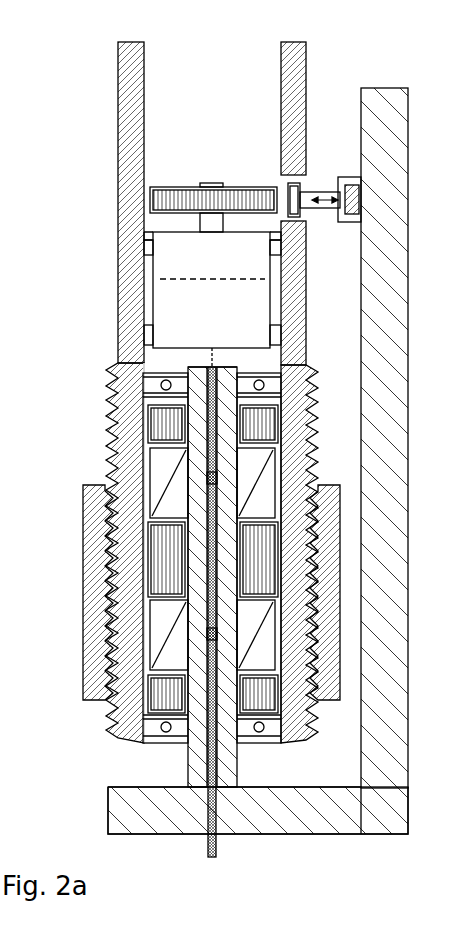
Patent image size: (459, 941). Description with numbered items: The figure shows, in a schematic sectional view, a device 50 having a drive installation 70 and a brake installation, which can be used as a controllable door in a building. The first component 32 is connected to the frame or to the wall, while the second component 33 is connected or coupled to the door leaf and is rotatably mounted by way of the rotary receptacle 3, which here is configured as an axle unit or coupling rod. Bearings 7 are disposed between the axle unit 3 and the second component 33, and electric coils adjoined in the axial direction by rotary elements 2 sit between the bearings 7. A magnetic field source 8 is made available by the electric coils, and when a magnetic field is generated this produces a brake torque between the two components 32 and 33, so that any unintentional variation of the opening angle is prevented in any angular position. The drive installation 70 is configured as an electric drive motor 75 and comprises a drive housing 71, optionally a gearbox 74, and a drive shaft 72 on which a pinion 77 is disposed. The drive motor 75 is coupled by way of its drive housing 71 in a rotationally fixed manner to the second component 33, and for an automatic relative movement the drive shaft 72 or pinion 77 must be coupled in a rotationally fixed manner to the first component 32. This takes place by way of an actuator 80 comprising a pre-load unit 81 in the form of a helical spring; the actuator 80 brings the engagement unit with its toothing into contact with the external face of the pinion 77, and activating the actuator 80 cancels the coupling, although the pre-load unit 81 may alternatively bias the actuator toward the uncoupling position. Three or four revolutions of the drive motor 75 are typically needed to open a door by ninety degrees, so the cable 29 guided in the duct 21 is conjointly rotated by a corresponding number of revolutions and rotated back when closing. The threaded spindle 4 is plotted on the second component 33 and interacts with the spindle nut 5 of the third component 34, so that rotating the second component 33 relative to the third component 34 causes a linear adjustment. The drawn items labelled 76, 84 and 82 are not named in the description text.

The device 50 is at (92, 78).
The second component 33 is at (125, 125).
The threaded sleeve wall 76 is at (130, 185).
The pinion 77 is at (162, 203).
The gearbox 74 is at (168, 251).
The drive motor 75 is at (144, 282).
The drive housing 71 is at (168, 317).
The drive installation 70 is at (200, 130).
The drive shaft 72 is at (223, 217).
The guide block 84 is at (302, 188).
The pre-load unit 81 is at (348, 177).
The direction of movement 82 is at (324, 236).
The actuator 80 is at (350, 212).
The bearings 7 is at (147, 377).
The threaded spindle 4 is at (125, 421).
The magnetic field source 8 is at (160, 466).
The third component 34 is at (93, 528).
The rotary elements 2 is at (155, 566).
The spindle nut 5 is at (97, 632).
The rotary receptacle 3 is at (228, 761).
The first component 32 is at (120, 822).
The cable 29 is at (207, 847).
The duct 21 is at (218, 818).